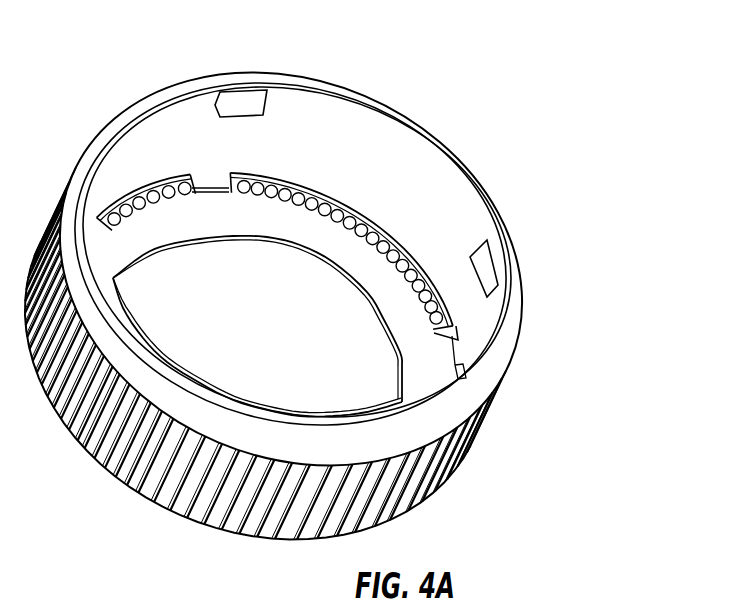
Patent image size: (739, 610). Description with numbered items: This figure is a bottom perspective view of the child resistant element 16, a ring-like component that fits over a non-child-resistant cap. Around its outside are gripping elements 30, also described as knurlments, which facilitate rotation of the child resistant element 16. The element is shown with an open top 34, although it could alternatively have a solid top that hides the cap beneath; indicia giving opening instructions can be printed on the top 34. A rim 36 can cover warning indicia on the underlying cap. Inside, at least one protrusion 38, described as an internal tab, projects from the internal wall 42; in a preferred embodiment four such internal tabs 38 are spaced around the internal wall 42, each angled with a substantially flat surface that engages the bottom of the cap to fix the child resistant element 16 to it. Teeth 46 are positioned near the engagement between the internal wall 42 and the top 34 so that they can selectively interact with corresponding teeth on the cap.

The child resistant element 16 is at (572, 292).
The gripping elements 30 is at (156, 465).
The top 34 is at (275, 232).
The rim 36 is at (400, 363).
The internal tabs 38 is at (482, 242).
The internal wall 42 is at (377, 166).
The teeth 46 is at (230, 187).